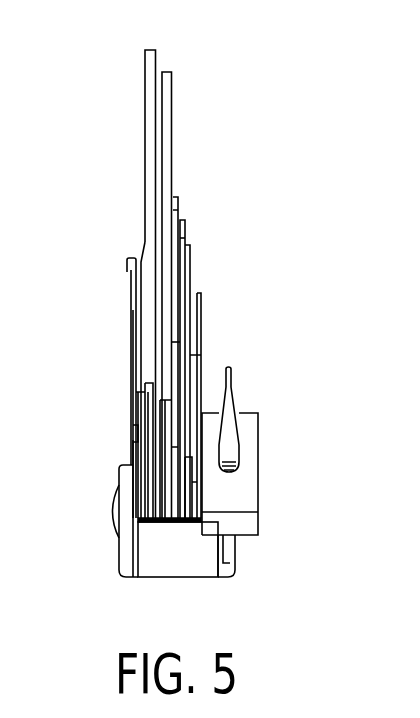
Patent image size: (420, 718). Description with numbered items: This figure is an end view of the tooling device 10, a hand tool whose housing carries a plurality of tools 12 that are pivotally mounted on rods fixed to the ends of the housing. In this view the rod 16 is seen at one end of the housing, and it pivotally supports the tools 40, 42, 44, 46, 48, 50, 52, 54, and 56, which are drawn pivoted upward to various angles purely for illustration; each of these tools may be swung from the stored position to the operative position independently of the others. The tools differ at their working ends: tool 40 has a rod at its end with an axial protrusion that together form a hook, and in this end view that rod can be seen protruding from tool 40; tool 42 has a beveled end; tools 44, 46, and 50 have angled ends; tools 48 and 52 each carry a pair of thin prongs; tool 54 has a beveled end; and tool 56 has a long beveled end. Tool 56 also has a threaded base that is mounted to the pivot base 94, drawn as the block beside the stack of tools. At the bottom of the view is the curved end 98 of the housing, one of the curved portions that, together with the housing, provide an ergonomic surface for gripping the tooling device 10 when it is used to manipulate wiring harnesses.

The tooling device 10 is at (87, 106).
The tools 12 is at (334, 208).
The rod 16 is at (113, 502).
The tool 40 is at (135, 367).
The tool 42 is at (143, 412).
The tool 44 is at (148, 188).
The tool 46 is at (158, 278).
The tool 48 is at (169, 156).
The tool 50 is at (180, 212).
The tool 52 is at (190, 272).
The tool 54 is at (198, 377).
The tool 56 is at (228, 443).
The pivot base 94 is at (243, 495).
The curved end 98 is at (153, 548).